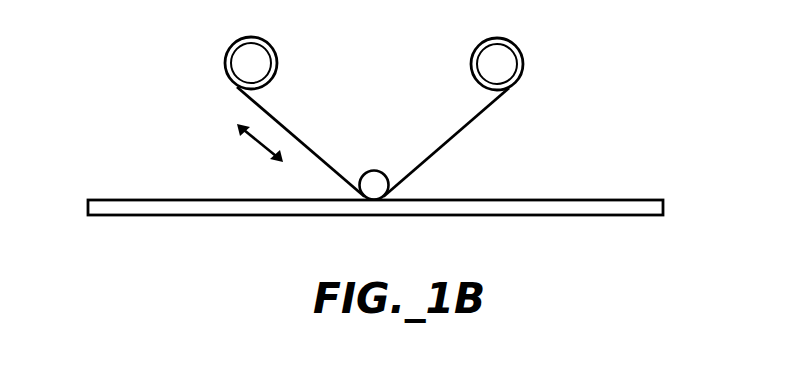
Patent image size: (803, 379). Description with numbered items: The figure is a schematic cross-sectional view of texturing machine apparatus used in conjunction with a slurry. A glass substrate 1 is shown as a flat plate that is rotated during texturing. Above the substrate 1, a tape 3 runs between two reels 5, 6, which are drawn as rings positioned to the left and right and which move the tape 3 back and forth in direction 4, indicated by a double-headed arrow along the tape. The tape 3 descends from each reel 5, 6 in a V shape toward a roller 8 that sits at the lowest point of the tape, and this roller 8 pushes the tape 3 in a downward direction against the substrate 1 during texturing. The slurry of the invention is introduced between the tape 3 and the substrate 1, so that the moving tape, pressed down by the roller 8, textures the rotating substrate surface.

The glass substrate 1 is at (618, 200).
The tape 3 is at (460, 133).
The direction 4 is at (254, 141).
The reel 5 is at (259, 64).
The reel 6 is at (499, 65).
The roller 8 is at (374, 184).